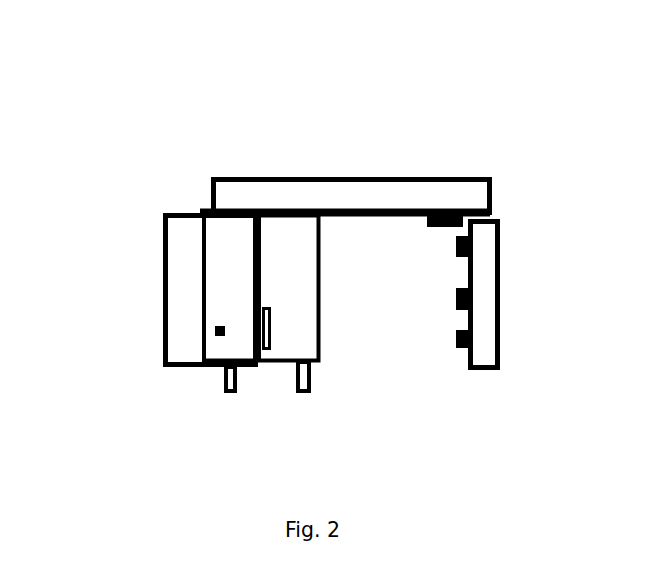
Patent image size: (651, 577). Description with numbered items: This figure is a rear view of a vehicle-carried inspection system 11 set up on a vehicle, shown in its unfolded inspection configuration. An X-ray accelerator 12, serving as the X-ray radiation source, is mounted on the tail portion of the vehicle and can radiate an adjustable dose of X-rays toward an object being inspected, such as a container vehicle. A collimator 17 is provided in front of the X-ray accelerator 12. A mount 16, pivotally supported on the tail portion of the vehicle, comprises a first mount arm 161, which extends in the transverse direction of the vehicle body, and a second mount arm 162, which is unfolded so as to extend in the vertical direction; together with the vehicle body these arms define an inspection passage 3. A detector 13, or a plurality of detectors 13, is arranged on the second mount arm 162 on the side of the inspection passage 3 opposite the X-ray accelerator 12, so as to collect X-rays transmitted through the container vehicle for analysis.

The vehicle-carried inspection system 11 is at (170, 148).
The X-ray accelerator 12 is at (218, 337).
The detector 13 is at (438, 227).
The mount 16 is at (396, 192).
The first mount arm 161 is at (410, 193).
The second mount arm 162 is at (500, 220).
The collimator 17 is at (271, 335).
The inspection passage 3 is at (368, 298).